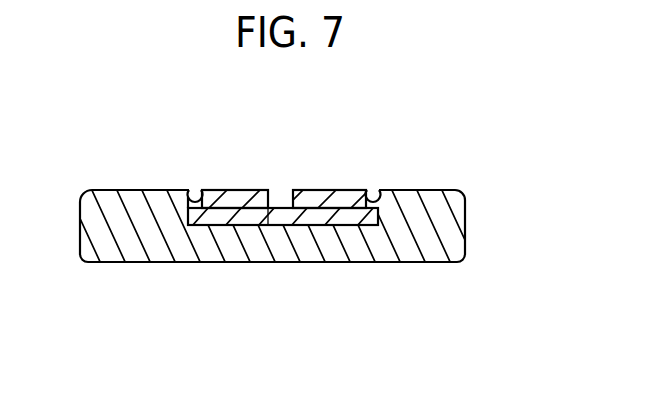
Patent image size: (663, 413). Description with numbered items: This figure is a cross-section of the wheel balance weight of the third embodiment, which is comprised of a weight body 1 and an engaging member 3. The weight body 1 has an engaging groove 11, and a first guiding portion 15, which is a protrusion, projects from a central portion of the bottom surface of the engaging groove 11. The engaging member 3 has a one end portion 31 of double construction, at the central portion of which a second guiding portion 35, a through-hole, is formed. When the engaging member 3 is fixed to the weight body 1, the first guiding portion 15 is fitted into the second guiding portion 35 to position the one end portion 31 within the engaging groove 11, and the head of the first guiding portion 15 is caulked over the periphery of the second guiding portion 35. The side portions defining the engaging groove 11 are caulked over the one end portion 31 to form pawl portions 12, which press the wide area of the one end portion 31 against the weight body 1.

The weight body 1 is at (458, 201).
The engaging member 3 is at (269, 195).
The engaging groove 11 is at (326, 221).
The pawl portion 12 is at (192, 189).
The first guiding portion 15 is at (275, 221).
The one end portion 31 is at (253, 189).
The second guiding portion 35 is at (296, 169).